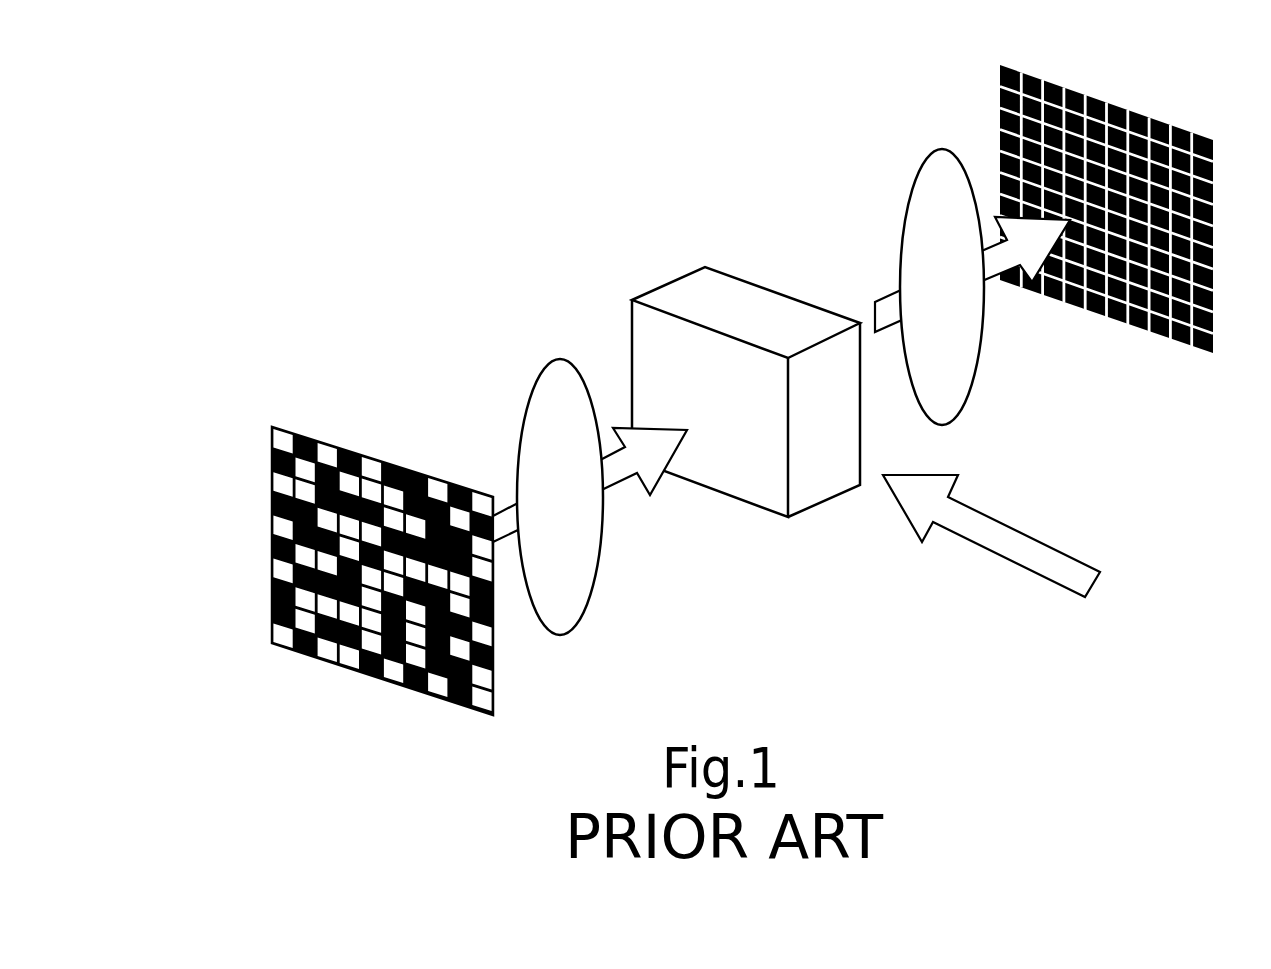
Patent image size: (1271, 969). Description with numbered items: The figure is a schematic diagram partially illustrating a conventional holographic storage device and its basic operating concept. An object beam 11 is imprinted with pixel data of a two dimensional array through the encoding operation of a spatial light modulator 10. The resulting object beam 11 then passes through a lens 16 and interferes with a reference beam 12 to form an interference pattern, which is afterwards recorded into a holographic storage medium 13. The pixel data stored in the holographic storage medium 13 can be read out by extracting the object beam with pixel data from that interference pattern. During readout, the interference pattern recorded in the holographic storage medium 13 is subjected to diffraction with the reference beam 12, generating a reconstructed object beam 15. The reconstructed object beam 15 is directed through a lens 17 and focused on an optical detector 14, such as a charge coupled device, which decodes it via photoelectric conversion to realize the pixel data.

The spatial light modulator 10 is at (283, 531).
The object beam 11 is at (606, 477).
The reference beam 12 is at (1030, 552).
The holographic storage medium 13 is at (690, 298).
The optical detector 14 is at (1170, 128).
The reconstructed object beam 15 is at (892, 303).
The lens 16 is at (577, 560).
The lens 17 is at (930, 218).